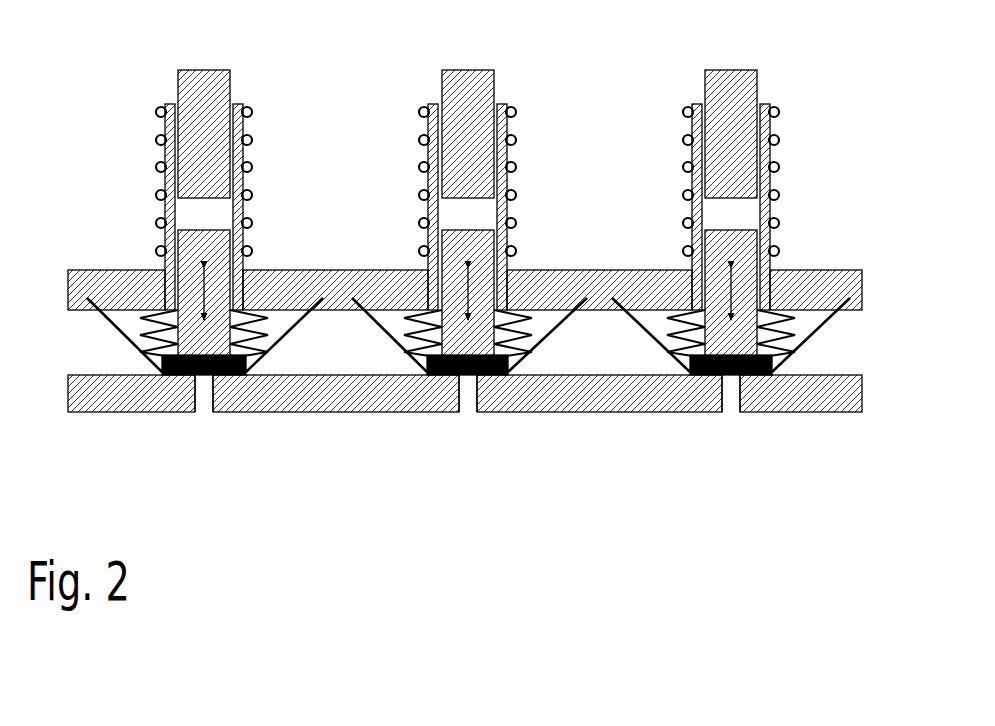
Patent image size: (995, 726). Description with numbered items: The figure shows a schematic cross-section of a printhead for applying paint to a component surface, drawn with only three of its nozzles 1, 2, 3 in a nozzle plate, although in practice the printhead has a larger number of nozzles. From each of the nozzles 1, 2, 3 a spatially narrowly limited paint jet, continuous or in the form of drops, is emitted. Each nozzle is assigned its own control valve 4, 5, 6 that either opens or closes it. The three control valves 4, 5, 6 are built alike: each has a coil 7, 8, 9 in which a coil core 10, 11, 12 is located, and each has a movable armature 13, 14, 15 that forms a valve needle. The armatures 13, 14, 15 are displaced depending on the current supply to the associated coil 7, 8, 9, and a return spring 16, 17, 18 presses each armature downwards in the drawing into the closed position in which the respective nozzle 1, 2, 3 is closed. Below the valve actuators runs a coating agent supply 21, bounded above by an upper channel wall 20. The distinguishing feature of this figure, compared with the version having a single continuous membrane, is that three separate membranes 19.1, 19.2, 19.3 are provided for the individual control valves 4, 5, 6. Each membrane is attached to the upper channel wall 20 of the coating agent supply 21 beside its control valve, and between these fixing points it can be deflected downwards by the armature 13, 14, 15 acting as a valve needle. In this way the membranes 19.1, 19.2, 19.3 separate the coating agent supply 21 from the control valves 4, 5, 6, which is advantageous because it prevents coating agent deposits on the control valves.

The nozzle 1 is at (203, 397).
The nozzle 2 is at (468, 397).
The nozzle 3 is at (732, 400).
The control valve 4 is at (202, 249).
The control valve 5 is at (470, 248).
The control valve 6 is at (741, 249).
The coil 7 is at (250, 110).
The coil 8 is at (514, 110).
The coil 9 is at (777, 110).
The coil core 10 is at (205, 90).
The coil core 11 is at (468, 92).
The coil core 12 is at (730, 92).
The movable armature 13 is at (205, 255).
The movable armature 14 is at (470, 252).
The movable armature 15 is at (733, 252).
The return spring 16 is at (152, 362).
The return spring 17 is at (422, 357).
The return spring 18 is at (790, 327).
The separate membrane 19.1 is at (282, 350).
The separate membrane 19.2 is at (552, 340).
The separate membrane 19.3 is at (800, 345).
The upper channel wall 20 is at (115, 292).
The coating agent supply 21 is at (100, 360).